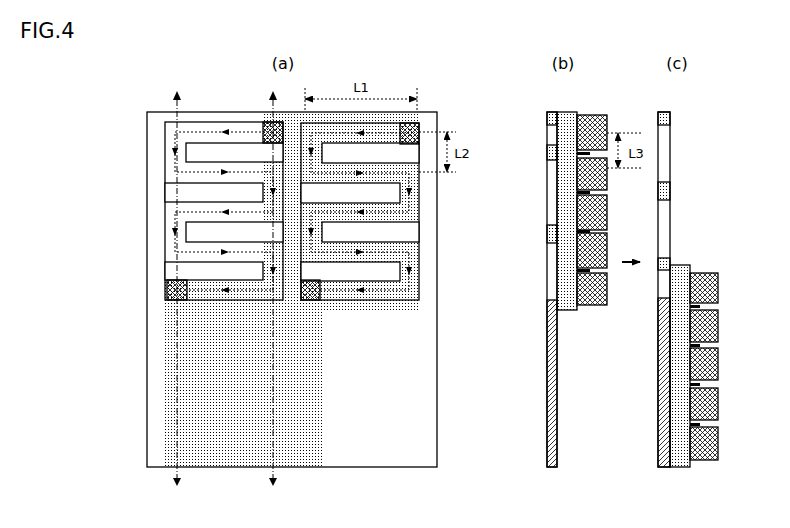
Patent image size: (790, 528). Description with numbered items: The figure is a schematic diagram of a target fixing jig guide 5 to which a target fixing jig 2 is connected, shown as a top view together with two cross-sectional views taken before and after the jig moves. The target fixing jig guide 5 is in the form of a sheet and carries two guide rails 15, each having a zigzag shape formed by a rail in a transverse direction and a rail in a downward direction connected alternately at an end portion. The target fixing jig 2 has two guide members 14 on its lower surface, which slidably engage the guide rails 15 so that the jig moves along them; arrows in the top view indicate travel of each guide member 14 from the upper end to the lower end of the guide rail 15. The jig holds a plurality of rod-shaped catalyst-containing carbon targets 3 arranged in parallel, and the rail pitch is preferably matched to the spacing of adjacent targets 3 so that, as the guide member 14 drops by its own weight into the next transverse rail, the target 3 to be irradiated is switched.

The target fixing jig 2 is at (324, 412).
The rod-shaped catalyst-containing carbon target 3 is at (609, 130).
The target fixing jig guide 5 is at (403, 467).
The guide member 14 is at (165, 290).
The guide rail 15 is at (203, 305).